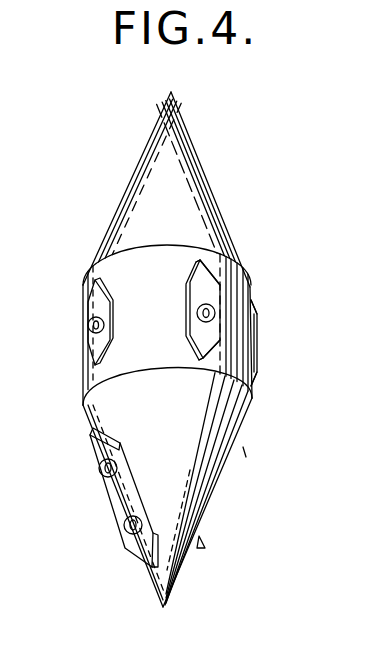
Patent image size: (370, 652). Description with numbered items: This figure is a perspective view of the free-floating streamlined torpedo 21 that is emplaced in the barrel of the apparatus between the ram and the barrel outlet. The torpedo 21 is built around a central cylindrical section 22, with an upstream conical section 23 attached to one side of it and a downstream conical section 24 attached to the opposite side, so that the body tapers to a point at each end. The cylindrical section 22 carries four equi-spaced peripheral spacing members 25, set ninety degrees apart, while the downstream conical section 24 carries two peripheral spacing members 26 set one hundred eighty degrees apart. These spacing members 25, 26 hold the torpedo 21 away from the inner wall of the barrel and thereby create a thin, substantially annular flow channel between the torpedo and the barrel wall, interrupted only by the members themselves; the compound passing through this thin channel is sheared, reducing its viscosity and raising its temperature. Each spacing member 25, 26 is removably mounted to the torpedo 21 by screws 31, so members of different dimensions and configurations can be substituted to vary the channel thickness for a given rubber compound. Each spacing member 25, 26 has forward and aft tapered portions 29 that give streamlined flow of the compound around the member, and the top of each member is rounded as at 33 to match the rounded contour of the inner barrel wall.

The torpedo 21 is at (214, 183).
The central cylindrical section 22 is at (236, 286).
The upstream conical section 23 is at (133, 193).
The downstream conical section 24 is at (182, 523).
The peripheral spacing members 25 is at (186, 296).
The peripheral spacing members 26 is at (103, 508).
The tapered portions 29 is at (197, 262).
The screws 31 is at (199, 313).
The rounded top 33 is at (207, 340).